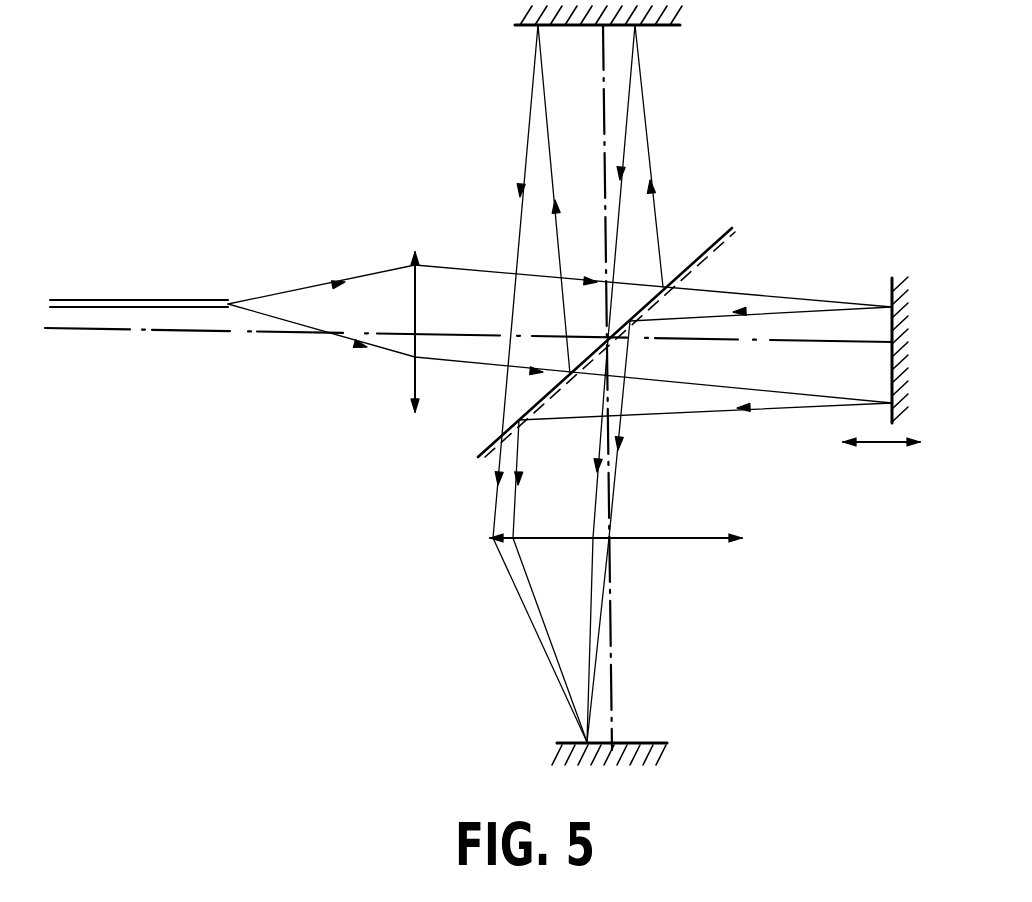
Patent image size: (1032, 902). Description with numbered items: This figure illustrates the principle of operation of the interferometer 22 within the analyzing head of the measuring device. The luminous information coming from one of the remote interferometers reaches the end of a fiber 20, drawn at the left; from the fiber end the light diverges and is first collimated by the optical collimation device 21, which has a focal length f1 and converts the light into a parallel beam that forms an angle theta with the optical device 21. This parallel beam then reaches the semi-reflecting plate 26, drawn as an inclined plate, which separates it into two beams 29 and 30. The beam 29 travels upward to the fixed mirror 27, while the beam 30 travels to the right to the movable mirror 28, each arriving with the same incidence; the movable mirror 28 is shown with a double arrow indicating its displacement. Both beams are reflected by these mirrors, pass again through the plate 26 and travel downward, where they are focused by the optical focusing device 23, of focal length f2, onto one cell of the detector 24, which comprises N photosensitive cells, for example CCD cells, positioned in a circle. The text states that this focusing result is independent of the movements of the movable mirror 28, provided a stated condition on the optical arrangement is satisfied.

The fiber 20 is at (146, 300).
The optical collimation device 21 is at (413, 405).
The interferometer 22 is at (396, 605).
The optical focusing device 23 is at (667, 539).
The detector 24 is at (642, 743).
The semi-reflecting plate 26 is at (717, 240).
The fixed mirror 27 is at (680, 27).
The movable mirror 28 is at (890, 287).
The beam 29 is at (638, 152).
The beam 30 is at (676, 412).